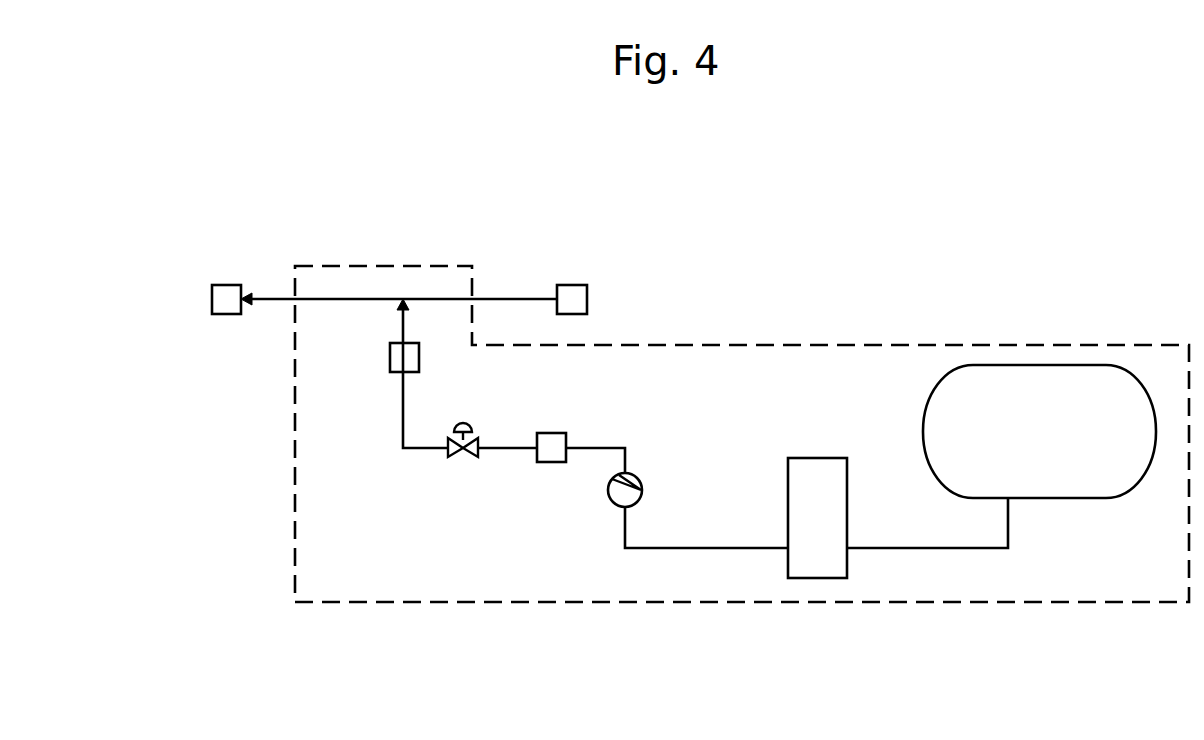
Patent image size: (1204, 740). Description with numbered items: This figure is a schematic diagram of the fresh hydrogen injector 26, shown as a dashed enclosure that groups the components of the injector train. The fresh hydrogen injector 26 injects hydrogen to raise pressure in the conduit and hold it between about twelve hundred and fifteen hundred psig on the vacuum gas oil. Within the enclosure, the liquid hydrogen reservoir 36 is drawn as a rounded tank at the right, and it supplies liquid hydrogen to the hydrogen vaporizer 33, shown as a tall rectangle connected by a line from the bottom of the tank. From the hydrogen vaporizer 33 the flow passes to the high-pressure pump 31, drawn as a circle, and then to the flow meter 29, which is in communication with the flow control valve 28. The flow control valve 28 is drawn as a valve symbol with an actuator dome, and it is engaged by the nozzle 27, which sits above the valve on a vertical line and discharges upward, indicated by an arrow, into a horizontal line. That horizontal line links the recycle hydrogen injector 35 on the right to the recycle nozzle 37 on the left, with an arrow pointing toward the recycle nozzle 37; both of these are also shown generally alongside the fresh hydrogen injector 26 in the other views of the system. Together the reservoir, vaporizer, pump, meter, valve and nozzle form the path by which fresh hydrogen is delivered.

The fresh hydrogen injector 26 is at (672, 603).
The nozzle 27 is at (388, 356).
The flow control valve 28 is at (453, 451).
The flow meter 29 is at (555, 432).
The high-pressure pump 31 is at (643, 488).
The hydrogen vaporizer 33 is at (798, 459).
The recycle hydrogen injector 35 is at (572, 283).
The liquid hydrogen reservoir 36 is at (1050, 499).
The recycle nozzle 37 is at (228, 283).